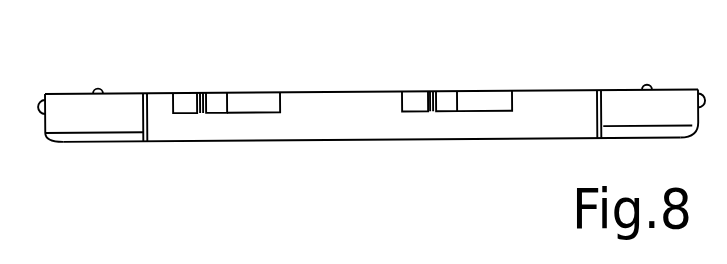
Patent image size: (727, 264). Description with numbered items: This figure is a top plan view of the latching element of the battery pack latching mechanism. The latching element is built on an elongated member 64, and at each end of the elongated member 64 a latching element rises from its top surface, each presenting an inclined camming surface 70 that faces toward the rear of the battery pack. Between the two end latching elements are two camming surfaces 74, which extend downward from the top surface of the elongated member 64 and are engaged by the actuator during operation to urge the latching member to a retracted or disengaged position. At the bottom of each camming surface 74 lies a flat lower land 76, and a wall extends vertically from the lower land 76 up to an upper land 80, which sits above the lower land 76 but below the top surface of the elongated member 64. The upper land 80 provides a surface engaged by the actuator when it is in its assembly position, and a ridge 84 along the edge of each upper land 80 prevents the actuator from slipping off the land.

The elongated member 64 is at (333, 104).
The inclined camming surface 70 is at (77, 106).
The camming surface 74 is at (253, 100).
The flat land 76 is at (216, 98).
The upper land 80 is at (183, 100).
The ridge 84 is at (200, 113).